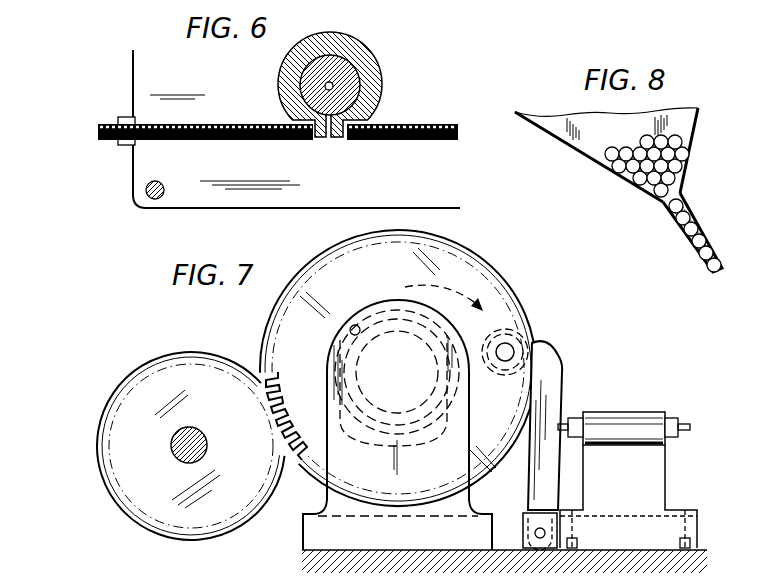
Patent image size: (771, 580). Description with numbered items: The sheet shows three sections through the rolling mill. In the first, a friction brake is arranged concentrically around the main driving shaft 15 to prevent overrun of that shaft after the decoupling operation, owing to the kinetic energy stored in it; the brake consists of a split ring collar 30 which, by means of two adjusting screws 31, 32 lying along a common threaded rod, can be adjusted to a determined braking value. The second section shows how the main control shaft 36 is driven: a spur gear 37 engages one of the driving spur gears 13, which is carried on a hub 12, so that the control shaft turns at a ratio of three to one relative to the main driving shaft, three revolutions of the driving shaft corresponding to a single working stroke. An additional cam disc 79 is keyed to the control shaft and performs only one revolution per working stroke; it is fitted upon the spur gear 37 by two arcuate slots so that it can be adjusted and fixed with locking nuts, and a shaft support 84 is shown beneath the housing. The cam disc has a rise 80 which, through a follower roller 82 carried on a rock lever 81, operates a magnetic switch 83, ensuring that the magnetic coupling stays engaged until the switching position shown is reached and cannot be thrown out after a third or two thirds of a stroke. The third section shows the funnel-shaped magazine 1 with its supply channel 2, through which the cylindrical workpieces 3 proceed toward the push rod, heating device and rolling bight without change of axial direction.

In FIG. 6, the split ring collar 30 is at (349, 51).
In FIG. 6, the main driving shaft 15 is at (349, 87).
In FIG. 6, the adjusting screw 32 is at (248, 122).
In FIG. 6, the adjusting screw 31 is at (416, 140).
In FIG. 8, the funnel-shaped magazine 1 is at (580, 150).
In FIG. 8, the supply channel 2 is at (685, 237).
In FIG. 8, the cylindrical workpieces 3 is at (683, 193).
In FIG. 7, the driving spur gear 13 is at (213, 376).
In FIG. 7, the hub shaft 12 is at (208, 447).
In FIG. 7, the spur gear 37 is at (430, 258).
In FIG. 7, the rise 80 is at (405, 287).
In FIG. 7, the cam disc 79 is at (340, 385).
In FIG. 7, the main control shaft 36 is at (350, 432).
In FIG. 7, the shaft support 84 is at (437, 414).
In FIG. 7, the rock lever 81 is at (552, 378).
In FIG. 7, the follower roller 82 is at (512, 332).
In FIG. 7, the magnetic switch 83 is at (628, 418).